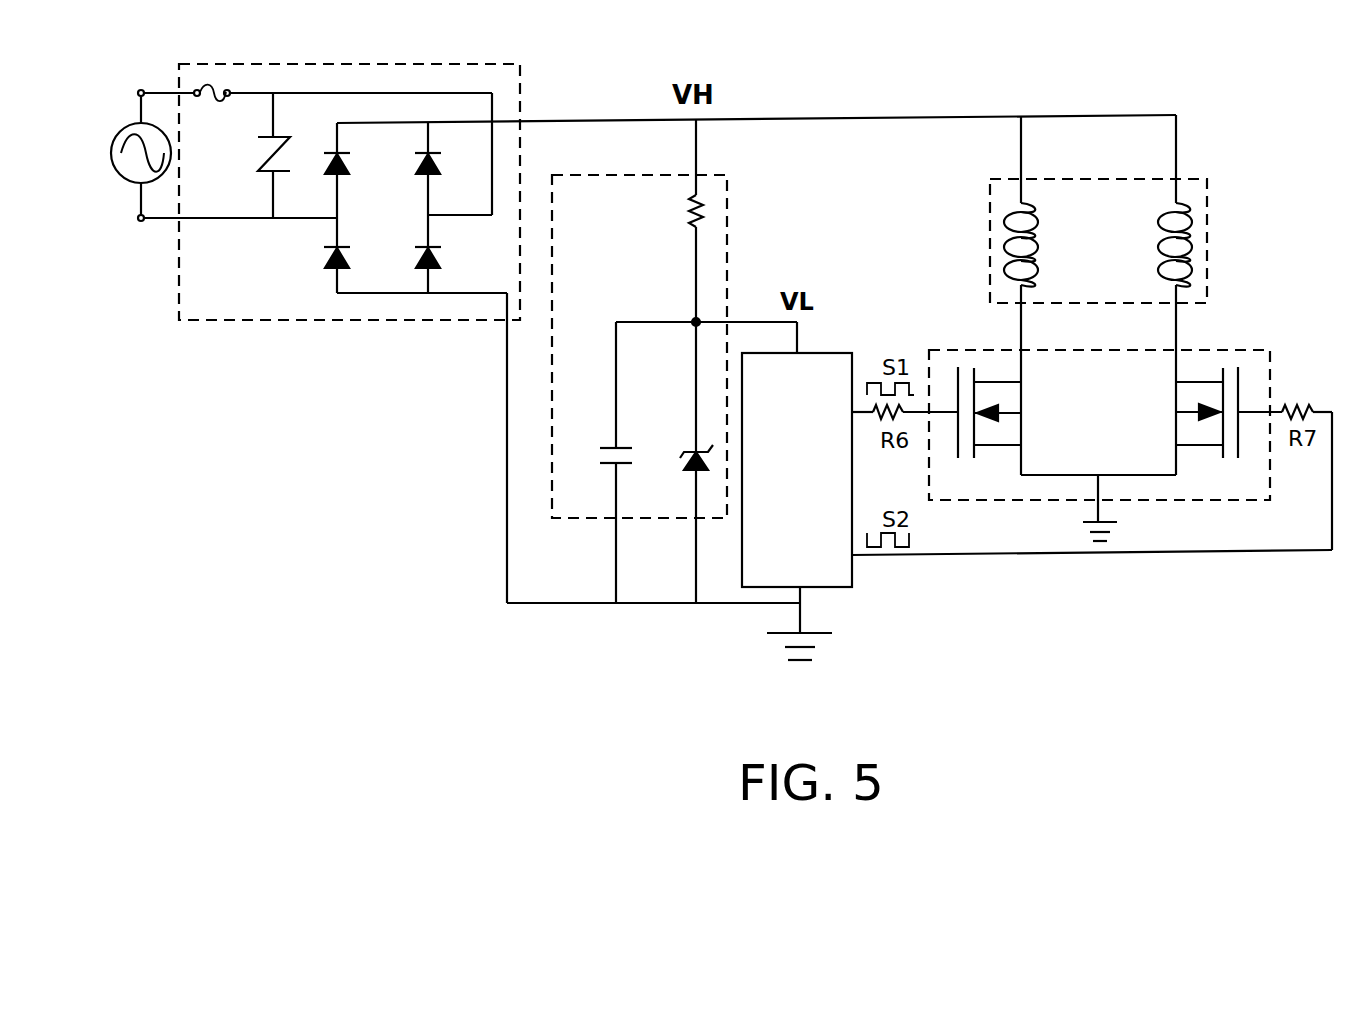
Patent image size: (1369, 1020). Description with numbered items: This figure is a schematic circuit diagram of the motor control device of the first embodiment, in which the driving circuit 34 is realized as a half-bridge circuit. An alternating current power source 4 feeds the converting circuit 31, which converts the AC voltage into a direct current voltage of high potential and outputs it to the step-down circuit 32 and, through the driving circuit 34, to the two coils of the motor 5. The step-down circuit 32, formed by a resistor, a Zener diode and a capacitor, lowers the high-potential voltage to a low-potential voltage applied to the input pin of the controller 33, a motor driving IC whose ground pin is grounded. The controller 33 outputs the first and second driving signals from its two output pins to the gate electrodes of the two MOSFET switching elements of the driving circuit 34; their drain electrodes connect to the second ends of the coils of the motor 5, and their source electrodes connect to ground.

The alternating current power source 4 is at (132, 126).
The converting circuit 31 is at (521, 80).
The step-down circuit 32 is at (727, 233).
The controller 33 is at (820, 350).
The driving circuit 34 is at (1248, 348).
The motor 5 is at (1187, 178).